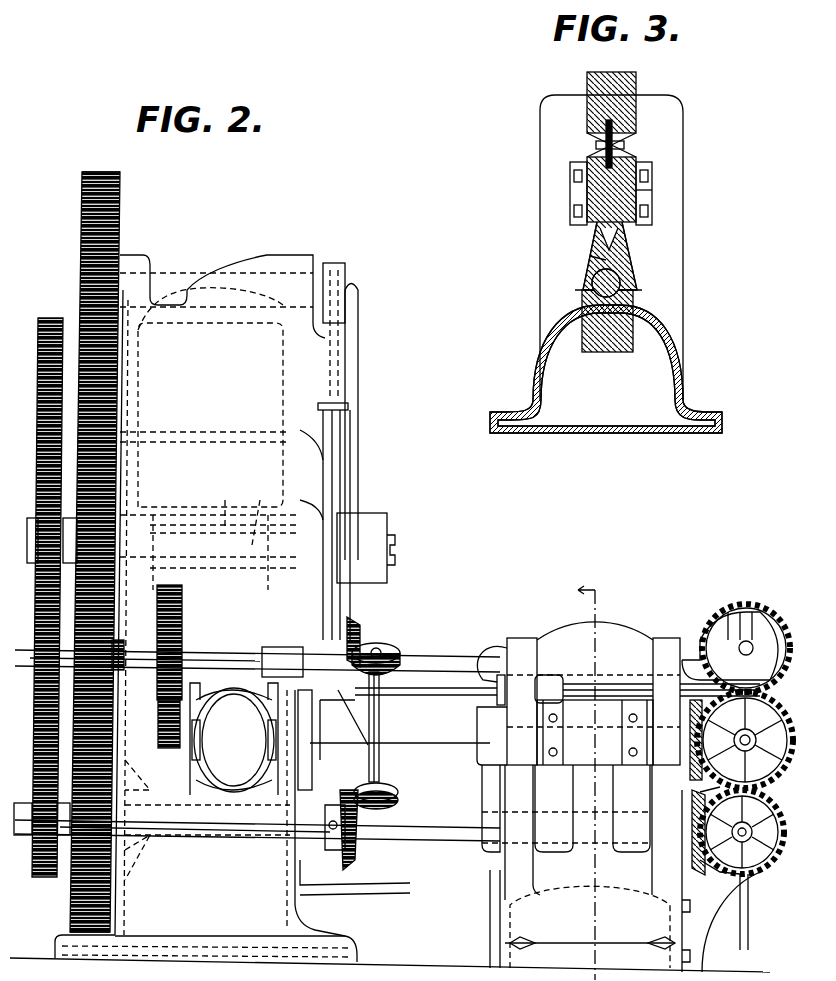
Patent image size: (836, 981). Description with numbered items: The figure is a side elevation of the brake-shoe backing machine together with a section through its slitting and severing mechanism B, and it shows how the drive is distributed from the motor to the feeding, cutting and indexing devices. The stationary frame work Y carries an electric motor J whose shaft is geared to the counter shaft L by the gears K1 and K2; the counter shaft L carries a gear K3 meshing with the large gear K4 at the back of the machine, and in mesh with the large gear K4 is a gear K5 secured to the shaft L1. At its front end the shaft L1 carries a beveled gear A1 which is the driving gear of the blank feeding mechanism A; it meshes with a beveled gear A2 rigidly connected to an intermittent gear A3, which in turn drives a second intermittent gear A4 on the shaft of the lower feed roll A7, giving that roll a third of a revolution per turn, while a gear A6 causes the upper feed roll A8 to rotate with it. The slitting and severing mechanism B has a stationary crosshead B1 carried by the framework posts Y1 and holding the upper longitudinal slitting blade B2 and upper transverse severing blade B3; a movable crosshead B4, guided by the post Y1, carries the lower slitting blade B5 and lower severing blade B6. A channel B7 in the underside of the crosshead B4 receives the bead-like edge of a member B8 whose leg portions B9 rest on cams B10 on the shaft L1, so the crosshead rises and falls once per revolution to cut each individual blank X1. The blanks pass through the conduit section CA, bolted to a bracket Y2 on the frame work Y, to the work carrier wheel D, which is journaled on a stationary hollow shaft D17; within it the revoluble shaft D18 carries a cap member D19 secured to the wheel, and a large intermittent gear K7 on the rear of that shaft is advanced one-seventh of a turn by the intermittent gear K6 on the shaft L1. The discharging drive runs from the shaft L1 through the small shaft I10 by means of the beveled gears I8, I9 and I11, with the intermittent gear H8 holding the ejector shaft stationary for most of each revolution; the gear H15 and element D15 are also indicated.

In FIG. 3, the stationary frame work Y is at (537, 384).
In FIG. 2, the stationary frame work Y is at (390, 831).
In FIG. 3, the framework post Y1 is at (551, 127).
In FIG. 2, the framework post Y1 is at (582, 866).
In FIG. 2, the bracket Y2 is at (368, 730).
In FIG. 3, the slitting and severing mechanism B is at (623, 223).
In FIG. 2, the slitting and severing mechanism B is at (633, 773).
In FIG. 3, the stationary crosshead B1 is at (622, 96).
In FIG. 2, the stationary crosshead B1 is at (563, 630).
In FIG. 3, the upper longitudinal slitting blade B2 is at (615, 130).
In FIG. 2, the upper longitudinal slitting blade B2 is at (583, 670).
In FIG. 2, the upper transverse severing blade B3 is at (493, 655).
In FIG. 3, the movable crosshead B4 is at (636, 191).
In FIG. 2, the movable crosshead B4 is at (487, 742).
In FIG. 3, the lower longitudinal slitting blade B5 is at (630, 158).
In FIG. 2, the lower longitudinal slitting blade B5 is at (595, 732).
In FIG. 2, the lower transverse severing blade B6 is at (497, 698).
In FIG. 3, the longitudinally extending channel B7 is at (575, 163).
In FIG. 3, the member B8 is at (603, 228).
In FIG. 3, the leg portions B9 is at (596, 256).
In FIG. 2, the leg portions B9 is at (550, 808).
In FIG. 3, the cams B10 is at (590, 280).
In FIG. 2, the counter shaft L is at (214, 655).
In FIG. 3, the shaft L1 is at (634, 292).
In FIG. 2, the shaft L1 is at (440, 843).
In FIG. 2, the large gear H15 is at (121, 222).
In FIG. 2, the intermittent gear H8 is at (356, 860).
In FIG. 2, the work carrier wheel D is at (336, 497).
In FIG. 2, the gear D15 is at (79, 235).
In FIG. 2, the stationary hollow shaft D17 is at (213, 505).
In FIG. 2, the revoluble shaft D18 is at (263, 512).
In FIG. 2, the cap member D19 is at (386, 525).
In FIG. 2, the gear K1 is at (168, 750).
In FIG. 2, the gear K2 is at (183, 626).
In FIG. 2, the gear K3 is at (120, 678).
In FIG. 2, the large gear K4 is at (118, 485).
In FIG. 2, the gear K5 is at (100, 890).
In FIG. 2, the intermittent gear K6 is at (44, 882).
In FIG. 2, the large intermittent gear K7 is at (40, 412).
In FIG. 2, the electric motor J is at (234, 739).
In FIG. 2, the beveled gear I8 is at (358, 630).
In FIG. 2, the beveled gear I9 is at (383, 645).
In FIG. 2, the small shaft I10 is at (381, 772).
In FIG. 2, the beveled gear I11 is at (394, 806).
In FIG. 2, the individual blank X1 is at (394, 740).
In FIG. 2, the conduit section CA is at (426, 676).
In FIG. 2, the blank feeding mechanism A is at (746, 636).
In FIG. 2, the beveled gear A1 is at (700, 866).
In FIG. 2, the beveled gear A2 is at (708, 878).
In FIG. 2, the intermittent gear A3 is at (773, 868).
In FIG. 2, the intermittent gear A4 is at (700, 742).
In FIG. 2, the gear A6 is at (731, 606).
In FIG. 2, the lower feed roll A7 is at (698, 788).
In FIG. 2, the upper feed roll A8 is at (718, 622).